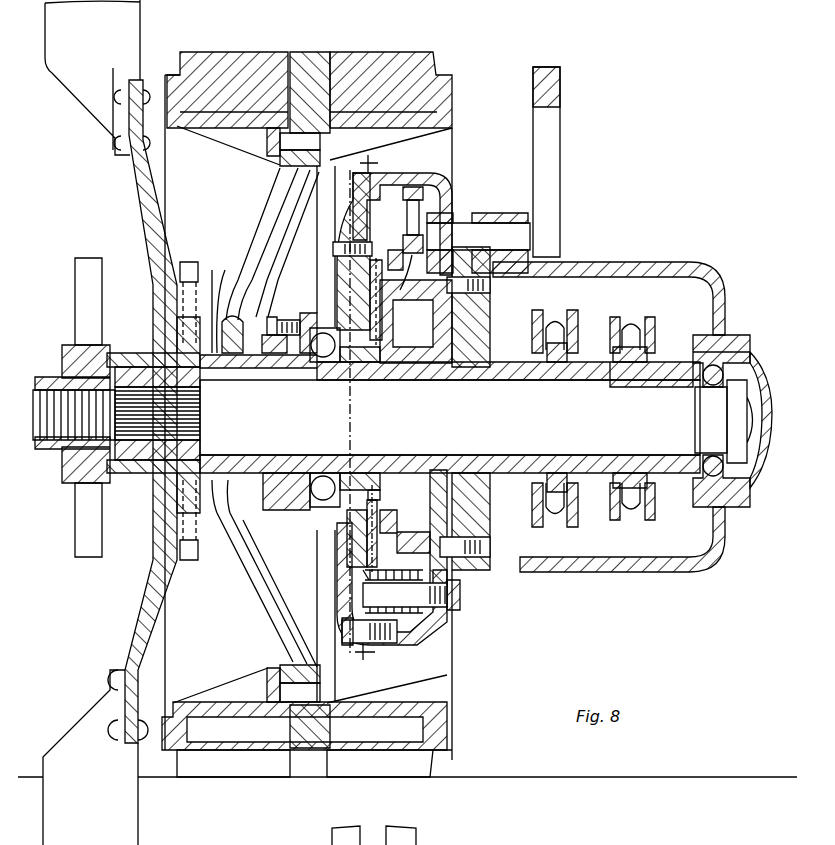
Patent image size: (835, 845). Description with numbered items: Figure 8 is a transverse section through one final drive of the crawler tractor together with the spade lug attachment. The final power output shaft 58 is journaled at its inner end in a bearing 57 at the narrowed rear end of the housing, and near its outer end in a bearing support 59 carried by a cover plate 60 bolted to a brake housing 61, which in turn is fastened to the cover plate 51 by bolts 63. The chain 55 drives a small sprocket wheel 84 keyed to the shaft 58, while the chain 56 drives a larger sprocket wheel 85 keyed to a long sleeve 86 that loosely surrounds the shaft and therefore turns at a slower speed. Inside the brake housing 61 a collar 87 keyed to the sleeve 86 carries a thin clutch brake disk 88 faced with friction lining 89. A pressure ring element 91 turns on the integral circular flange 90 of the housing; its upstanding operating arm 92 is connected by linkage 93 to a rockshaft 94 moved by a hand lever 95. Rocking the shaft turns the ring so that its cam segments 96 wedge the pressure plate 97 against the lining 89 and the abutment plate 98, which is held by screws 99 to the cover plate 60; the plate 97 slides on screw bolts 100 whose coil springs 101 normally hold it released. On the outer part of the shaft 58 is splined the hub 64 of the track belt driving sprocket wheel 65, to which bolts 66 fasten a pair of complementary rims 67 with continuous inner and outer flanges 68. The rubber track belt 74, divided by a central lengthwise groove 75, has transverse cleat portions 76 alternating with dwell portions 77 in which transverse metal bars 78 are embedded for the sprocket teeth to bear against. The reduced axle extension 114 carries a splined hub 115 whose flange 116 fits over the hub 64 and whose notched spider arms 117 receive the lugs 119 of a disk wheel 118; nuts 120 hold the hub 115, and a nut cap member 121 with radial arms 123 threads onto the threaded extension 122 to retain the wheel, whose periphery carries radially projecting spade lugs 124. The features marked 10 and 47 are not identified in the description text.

The axis of rotation 10 is at (354, 409).
The gear 47 is at (420, 840).
The cover plate 51 is at (483, 562).
The chain 55 is at (648, 320).
The chain 56 is at (570, 312).
The bearing 57 is at (712, 470).
The final power output shaft 58 is at (670, 393).
The bearing support 59 is at (320, 337).
The cover plate 60 is at (335, 538).
The brake housing 61 is at (427, 627).
The bolts 63 is at (492, 285).
The hub 64 is at (282, 500).
The track belt driving sprocket wheel 65 is at (310, 750).
The bolts 66 is at (267, 138).
The complementary rims 67 is at (240, 703).
The inner and outer flanges 68 is at (165, 75).
The rubber track belt 74 is at (433, 68).
The central lengthwise groove 75 is at (327, 70).
The transverse cleat portions 76 is at (403, 52).
The dwell portions 77 is at (255, 747).
The transverse metal bars 78 is at (296, 90).
The small sprocket wheel 84 is at (630, 507).
The larger sprocket wheel 85 is at (557, 517).
The sleeve 86 is at (493, 365).
The collar 87 is at (427, 363).
The clutch brake disk 88 is at (382, 494).
The friction material lining 89 is at (378, 260).
The circular flange 90 is at (432, 348).
The pressure ring element 91 is at (383, 522).
The operating arm 92 is at (416, 260).
The linkage 93 is at (418, 209).
The rockshaft 94 is at (482, 232).
The hand lever 95 is at (562, 128).
The cam segments 96 is at (407, 580).
The pressure plate 97 is at (417, 303).
The abutment plate 98 is at (340, 272).
The screws 99 is at (333, 249).
The screw bolts 100 is at (460, 593).
The coil springs 101 is at (427, 630).
The axle extension 114 is at (190, 396).
The splined hub 115 is at (145, 365).
The flange 116 is at (200, 282).
The notched spider arms 117 is at (188, 262).
The disk wheel 118 is at (680, 573).
The lugs 119 is at (200, 267).
The nuts 120 is at (77, 455).
The nut cap member 121 is at (67, 368).
The threaded extension 122 is at (40, 437).
The radial arms 123 is at (100, 272).
The spade lugs 124 is at (137, 20).